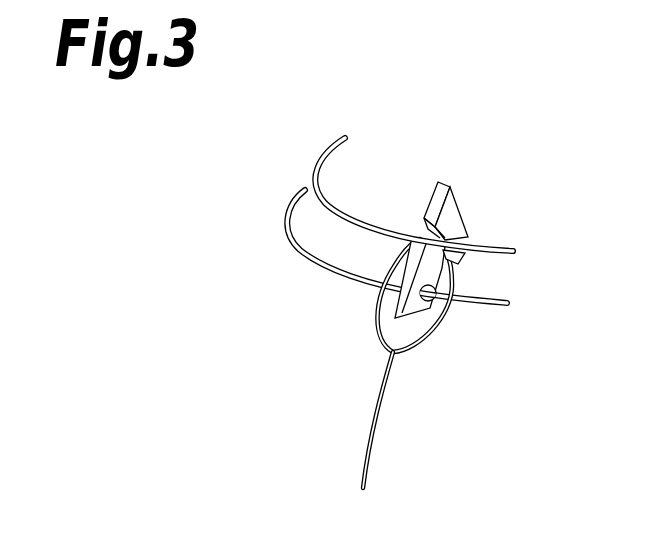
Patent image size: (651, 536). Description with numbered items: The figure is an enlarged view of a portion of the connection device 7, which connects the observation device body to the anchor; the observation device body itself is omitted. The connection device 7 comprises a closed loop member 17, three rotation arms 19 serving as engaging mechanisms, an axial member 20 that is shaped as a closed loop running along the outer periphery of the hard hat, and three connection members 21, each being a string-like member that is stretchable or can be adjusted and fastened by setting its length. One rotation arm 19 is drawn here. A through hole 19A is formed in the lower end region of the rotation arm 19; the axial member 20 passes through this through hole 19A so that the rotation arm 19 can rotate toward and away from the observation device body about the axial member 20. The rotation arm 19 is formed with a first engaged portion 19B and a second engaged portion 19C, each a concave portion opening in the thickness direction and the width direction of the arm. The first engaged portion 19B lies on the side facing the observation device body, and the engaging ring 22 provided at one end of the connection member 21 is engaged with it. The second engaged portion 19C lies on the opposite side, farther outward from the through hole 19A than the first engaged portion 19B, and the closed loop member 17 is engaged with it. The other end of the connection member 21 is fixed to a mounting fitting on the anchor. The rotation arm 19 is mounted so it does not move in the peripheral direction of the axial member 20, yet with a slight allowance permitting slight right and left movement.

The connection device 7 is at (407, 136).
The closed loop member 17 is at (490, 240).
The rotation arm 19 is at (458, 207).
The through hole 19A is at (430, 308).
The first engaged portion 19B is at (453, 256).
The second engaged portion 19C is at (427, 228).
The axial member 20 is at (488, 306).
The connection member 21 is at (368, 422).
The engaging ring 22 is at (373, 329).